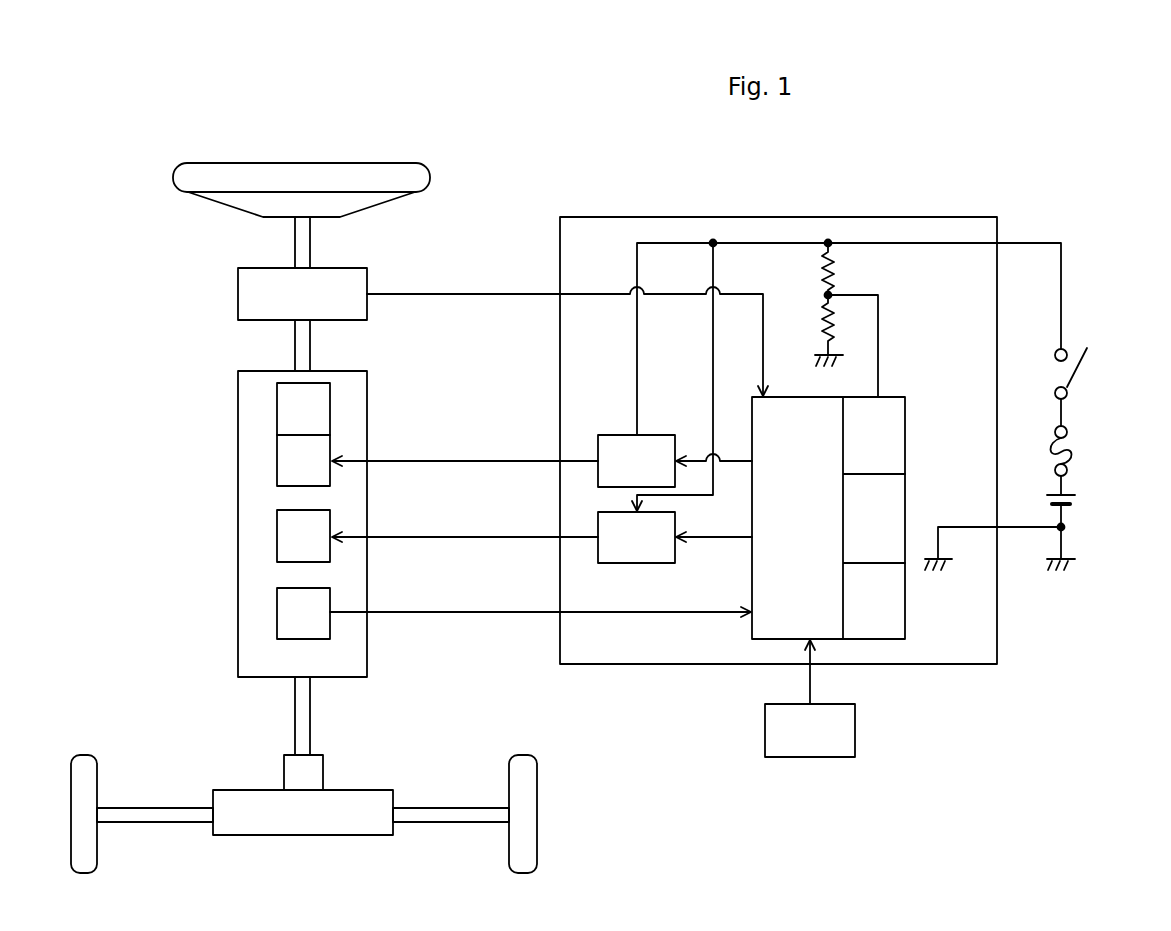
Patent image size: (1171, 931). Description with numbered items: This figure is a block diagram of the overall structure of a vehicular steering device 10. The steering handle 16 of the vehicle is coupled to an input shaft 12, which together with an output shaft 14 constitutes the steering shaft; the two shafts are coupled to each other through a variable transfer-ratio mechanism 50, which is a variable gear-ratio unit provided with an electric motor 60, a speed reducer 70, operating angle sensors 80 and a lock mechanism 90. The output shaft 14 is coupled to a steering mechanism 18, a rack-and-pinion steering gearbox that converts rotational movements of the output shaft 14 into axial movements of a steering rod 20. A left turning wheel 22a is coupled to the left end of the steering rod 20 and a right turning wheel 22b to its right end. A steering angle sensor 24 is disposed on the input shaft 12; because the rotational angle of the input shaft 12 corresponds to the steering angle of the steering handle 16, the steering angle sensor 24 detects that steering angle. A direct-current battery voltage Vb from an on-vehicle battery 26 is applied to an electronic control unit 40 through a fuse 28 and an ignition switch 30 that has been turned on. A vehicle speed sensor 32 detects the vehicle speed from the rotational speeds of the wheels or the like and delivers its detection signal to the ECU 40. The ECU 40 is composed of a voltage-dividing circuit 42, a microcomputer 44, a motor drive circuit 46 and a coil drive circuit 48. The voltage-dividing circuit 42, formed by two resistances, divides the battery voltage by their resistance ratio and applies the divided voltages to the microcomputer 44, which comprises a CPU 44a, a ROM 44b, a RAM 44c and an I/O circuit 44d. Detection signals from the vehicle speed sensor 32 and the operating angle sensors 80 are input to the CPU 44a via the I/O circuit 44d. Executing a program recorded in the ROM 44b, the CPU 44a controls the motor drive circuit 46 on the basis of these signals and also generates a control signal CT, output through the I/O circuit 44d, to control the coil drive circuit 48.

The vehicular steering device 10 is at (527, 173).
The input shaft 12 is at (293, 240).
The output shaft 14 is at (295, 717).
The steering handle 16 is at (194, 163).
The steering mechanism 18 is at (305, 820).
The steering rod 20 is at (152, 822).
The left turning wheel 22a is at (82, 755).
The right turning wheel 22b is at (521, 755).
The steering angle sensor 24 is at (238, 292).
The on-vehicle battery 26 is at (1078, 492).
The fuse 28 is at (1078, 450).
The ignition switch 30 is at (1086, 367).
The vehicle speed sensor 32 is at (811, 757).
The electronic control unit 40 is at (596, 217).
The voltage-dividing circuit 42 is at (899, 300).
The microcomputer 44 is at (887, 397).
The CPU 44a is at (892, 410).
The ROM 44b is at (892, 490).
The RAM 44c is at (892, 620).
The I/O circuit 44d is at (750, 627).
The motor drive circuit 46 is at (615, 435).
The coil drive circuit 48 is at (592, 563).
The variable transfer-ratio mechanism 50 is at (357, 383).
The electric motor 60 is at (277, 460).
The speed reducer 70 is at (277, 405).
The operating angle sensors 80 is at (277, 615).
The lock mechanism 90 is at (277, 535).